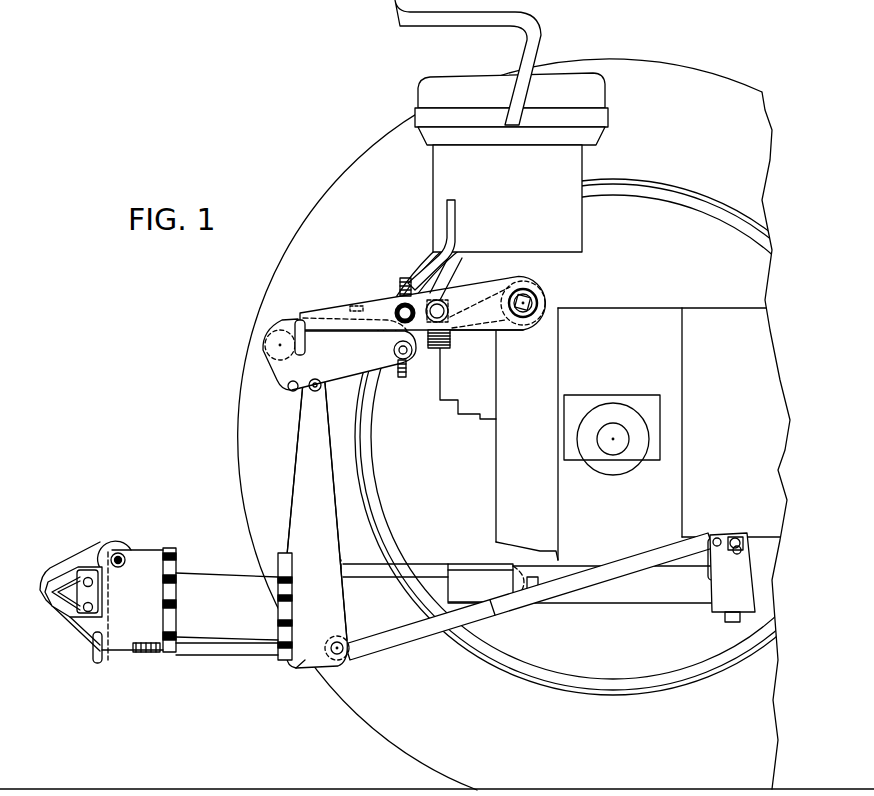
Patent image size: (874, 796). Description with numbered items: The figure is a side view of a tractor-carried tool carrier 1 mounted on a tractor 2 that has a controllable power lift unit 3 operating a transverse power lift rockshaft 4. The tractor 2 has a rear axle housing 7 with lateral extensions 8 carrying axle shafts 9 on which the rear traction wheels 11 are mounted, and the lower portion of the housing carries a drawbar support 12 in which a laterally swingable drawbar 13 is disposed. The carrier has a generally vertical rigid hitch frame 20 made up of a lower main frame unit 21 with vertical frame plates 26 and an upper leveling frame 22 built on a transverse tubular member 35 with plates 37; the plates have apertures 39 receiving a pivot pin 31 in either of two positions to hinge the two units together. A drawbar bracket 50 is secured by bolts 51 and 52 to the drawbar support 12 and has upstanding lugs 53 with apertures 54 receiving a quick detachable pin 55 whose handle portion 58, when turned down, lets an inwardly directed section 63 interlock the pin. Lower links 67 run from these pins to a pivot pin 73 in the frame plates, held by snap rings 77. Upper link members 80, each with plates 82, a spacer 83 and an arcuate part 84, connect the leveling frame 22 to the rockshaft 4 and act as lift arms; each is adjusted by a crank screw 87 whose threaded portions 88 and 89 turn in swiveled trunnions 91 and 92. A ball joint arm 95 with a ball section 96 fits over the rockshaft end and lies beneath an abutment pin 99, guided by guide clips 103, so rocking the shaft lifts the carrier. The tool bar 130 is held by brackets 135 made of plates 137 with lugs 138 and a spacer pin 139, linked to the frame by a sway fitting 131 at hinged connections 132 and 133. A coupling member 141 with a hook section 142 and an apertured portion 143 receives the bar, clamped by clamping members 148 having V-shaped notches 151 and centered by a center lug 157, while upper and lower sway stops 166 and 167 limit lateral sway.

The tool carrier 1 is at (316, 292).
The tractor 2 is at (720, 292).
The power lift unit 3 is at (453, 420).
The power lift rockshaft 4 is at (546, 300).
The rear axle housing 7 is at (687, 352).
The lateral extensions 8 is at (640, 397).
The axle shafts 9 is at (612, 430).
The rear traction wheels 11 is at (693, 78).
The drawbar support 12 is at (470, 577).
The drawbar 13 is at (350, 562).
The hitch frame 20 is at (294, 434).
The lower main frame unit 21 is at (297, 518).
The leveling frame 22 is at (342, 392).
The frame plate 26 is at (312, 477).
The pivot pin 31 is at (318, 380).
The transverse tubular member 35 is at (265, 344).
The plate 37 is at (339, 354).
The apertures 39 is at (289, 389).
The drawbar bracket 50 is at (616, 600).
The bolt 51 is at (530, 575).
The bolt 52 is at (728, 620).
The upstanding lugs 53 is at (742, 570).
The apertures 54 is at (717, 539).
The quick detachable pin 55 is at (297, 323).
The handle portion 58 is at (708, 572).
The inwardly directed section 63 is at (735, 538).
The lower links 67 is at (448, 631).
The pivot pin 73 is at (326, 644).
The snap ring 77 is at (300, 660).
The upper link member 80 is at (375, 298).
The plate 82 is at (463, 299).
The spacer 83 is at (357, 305).
The arcuate part 84 is at (519, 293).
The crank screw 87 is at (430, 254).
The threaded portion 88 is at (404, 296).
The threaded portion 89 is at (405, 372).
The swiveled trunnion 91 is at (401, 305).
The swiveled trunnion 92 is at (400, 360).
The ball joint arm 95 is at (485, 300).
The ball section 96 is at (530, 285).
The abutment pin 99 is at (441, 300).
The guide clips 103 is at (447, 342).
The tool bar 130 is at (74, 606).
The sway fitting 131 is at (198, 571).
The hinged connection 132 is at (278, 558).
The hinged connection 133 is at (167, 546).
The tool bar carrying bracket 135 is at (138, 653).
The plate 137 is at (140, 556).
The lugs 138 is at (92, 645).
The pin 139 is at (120, 553).
The coupling member 141 is at (78, 548).
The hook section 142 is at (116, 546).
The apertured portion 143 is at (62, 578).
The clamping members 148 is at (95, 597).
The V-shaped notch 151 is at (62, 593).
The center lug 157 is at (72, 570).
The upper sway stop 166 is at (212, 650).
The lower sway stop 167 is at (240, 657).